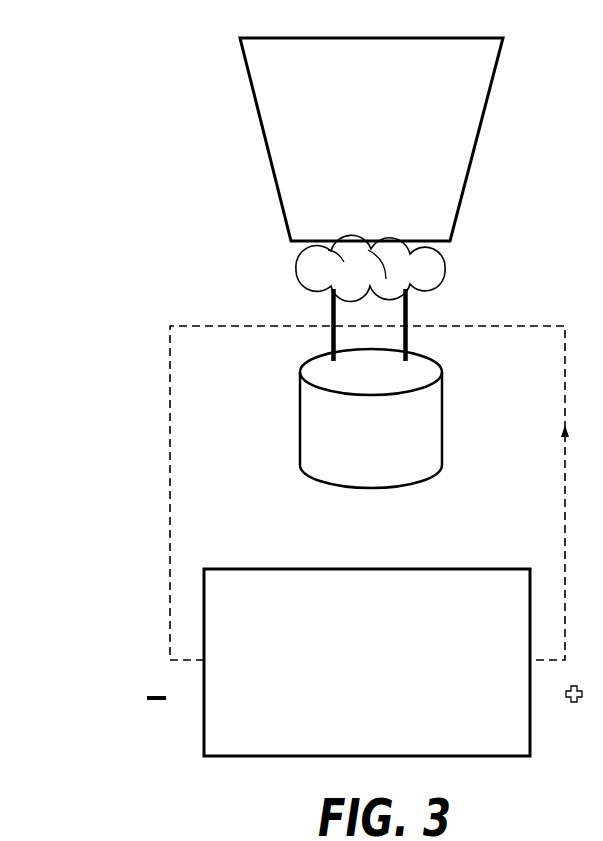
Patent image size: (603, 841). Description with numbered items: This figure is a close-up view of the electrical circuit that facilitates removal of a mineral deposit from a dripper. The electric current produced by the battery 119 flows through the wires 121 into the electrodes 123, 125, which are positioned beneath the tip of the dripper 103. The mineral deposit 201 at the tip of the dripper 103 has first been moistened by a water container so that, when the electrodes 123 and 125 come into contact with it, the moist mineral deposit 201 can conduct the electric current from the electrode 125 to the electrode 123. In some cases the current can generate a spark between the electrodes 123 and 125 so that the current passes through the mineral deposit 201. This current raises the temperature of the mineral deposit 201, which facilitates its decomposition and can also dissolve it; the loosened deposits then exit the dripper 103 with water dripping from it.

The dripper 103 is at (375, 141).
The mineral deposit 201 is at (438, 261).
The electrode 123 is at (323, 301).
The electrode 125 is at (400, 301).
The wires 121 is at (162, 485).
The battery 119 is at (373, 668).